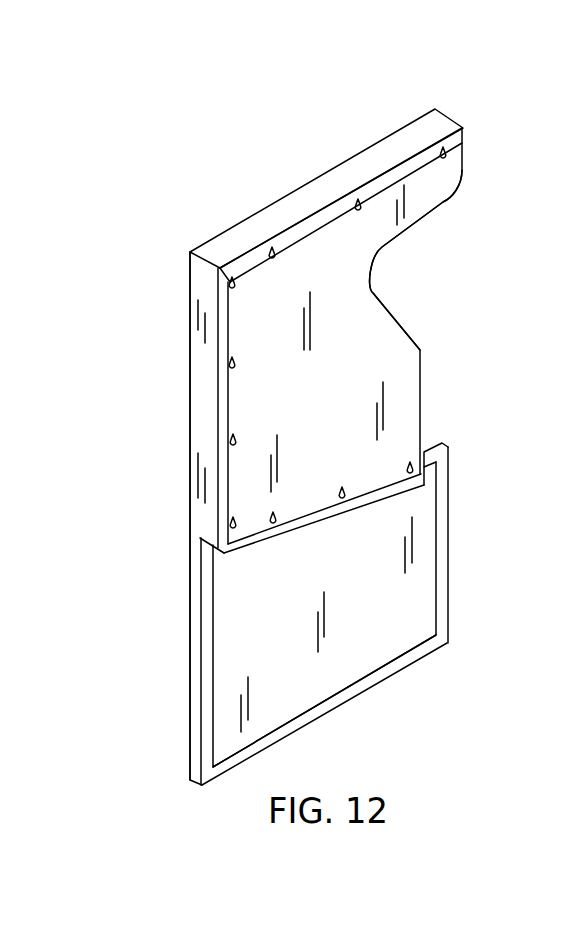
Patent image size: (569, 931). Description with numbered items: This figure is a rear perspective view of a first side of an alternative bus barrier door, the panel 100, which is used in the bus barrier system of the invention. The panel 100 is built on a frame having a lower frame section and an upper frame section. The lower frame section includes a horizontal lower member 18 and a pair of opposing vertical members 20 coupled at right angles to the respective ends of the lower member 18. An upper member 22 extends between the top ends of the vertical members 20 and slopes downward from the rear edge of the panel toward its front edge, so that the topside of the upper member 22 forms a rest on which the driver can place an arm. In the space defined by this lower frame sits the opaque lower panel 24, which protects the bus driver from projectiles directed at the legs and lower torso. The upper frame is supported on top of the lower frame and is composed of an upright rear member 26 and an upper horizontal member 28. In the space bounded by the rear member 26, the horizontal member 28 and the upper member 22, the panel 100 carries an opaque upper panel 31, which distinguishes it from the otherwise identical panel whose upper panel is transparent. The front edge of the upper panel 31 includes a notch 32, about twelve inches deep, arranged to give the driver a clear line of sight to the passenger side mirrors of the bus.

The panel 100 is at (140, 488).
The opaque upper panel 31 is at (331, 380).
The upper horizontal member 28 is at (332, 180).
The upright rear member 26 is at (191, 363).
The notch 32 is at (420, 280).
The opaque lower panel 24 is at (331, 580).
The upper member 22 is at (440, 440).
The vertical members 20 is at (450, 558).
The horizontal lower member 18 is at (372, 685).